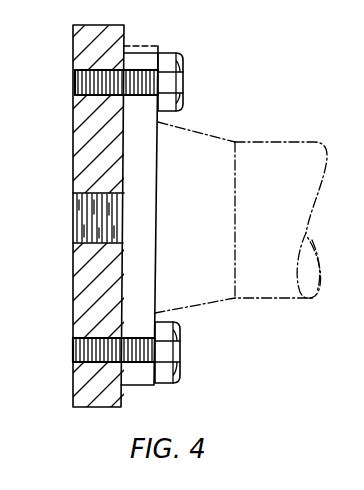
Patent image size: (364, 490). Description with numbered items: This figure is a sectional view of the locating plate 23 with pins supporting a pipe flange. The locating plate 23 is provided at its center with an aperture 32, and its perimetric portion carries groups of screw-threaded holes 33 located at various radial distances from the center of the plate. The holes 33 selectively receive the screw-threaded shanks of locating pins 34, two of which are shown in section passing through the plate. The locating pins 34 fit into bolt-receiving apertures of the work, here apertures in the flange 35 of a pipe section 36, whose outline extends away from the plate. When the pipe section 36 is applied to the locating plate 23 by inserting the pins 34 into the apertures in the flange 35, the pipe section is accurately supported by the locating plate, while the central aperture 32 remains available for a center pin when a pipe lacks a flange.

The locating plate 23 is at (73, 322).
The aperture 32 is at (80, 208).
The screw-threaded holes 33 is at (86, 73).
The locating pins 34 is at (184, 83).
The flange 35 is at (160, 47).
The pipe section 36 is at (260, 142).